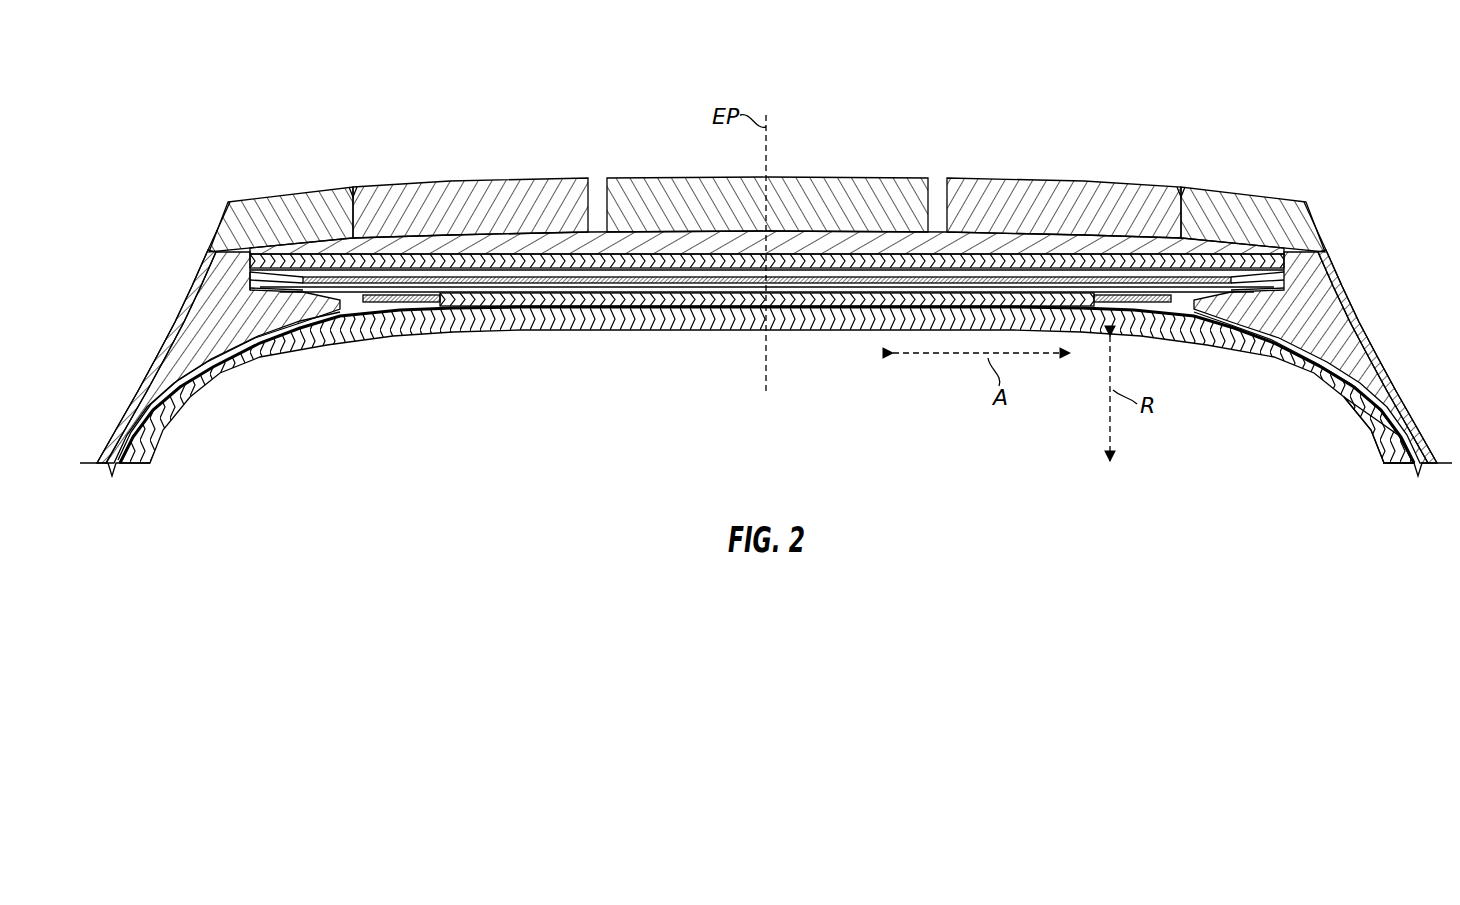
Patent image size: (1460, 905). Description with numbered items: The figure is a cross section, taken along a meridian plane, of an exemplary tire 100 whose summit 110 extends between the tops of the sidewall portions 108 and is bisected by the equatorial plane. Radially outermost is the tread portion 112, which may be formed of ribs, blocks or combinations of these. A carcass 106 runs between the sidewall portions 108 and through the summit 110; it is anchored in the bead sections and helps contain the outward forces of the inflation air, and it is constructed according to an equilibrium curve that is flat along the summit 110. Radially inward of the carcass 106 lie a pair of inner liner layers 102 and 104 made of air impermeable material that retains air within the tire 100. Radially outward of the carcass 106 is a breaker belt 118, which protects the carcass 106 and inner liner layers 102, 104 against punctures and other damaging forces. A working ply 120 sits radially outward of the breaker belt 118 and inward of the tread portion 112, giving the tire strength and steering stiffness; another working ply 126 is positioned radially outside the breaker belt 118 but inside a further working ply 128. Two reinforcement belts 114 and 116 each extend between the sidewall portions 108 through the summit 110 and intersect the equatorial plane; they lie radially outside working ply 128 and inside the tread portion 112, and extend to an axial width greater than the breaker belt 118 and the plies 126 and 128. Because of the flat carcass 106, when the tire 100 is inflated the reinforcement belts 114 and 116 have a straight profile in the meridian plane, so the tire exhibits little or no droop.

The tire 100 is at (183, 80).
The inner liner layer 102 is at (1337, 388).
The inner liner layer 104 is at (1392, 440).
The carcass 106 is at (148, 438).
The sidewall portion 108 is at (122, 419).
The summit 110 is at (1345, 235).
The tread portion 112 is at (477, 178).
The reinforcement belt 114 is at (1324, 246).
The reinforcement belt 116 is at (1288, 262).
The breaker belt 118 is at (1208, 327).
The working ply 120 is at (1280, 318).
The working ply 126 is at (230, 365).
The working ply 128 is at (293, 292).